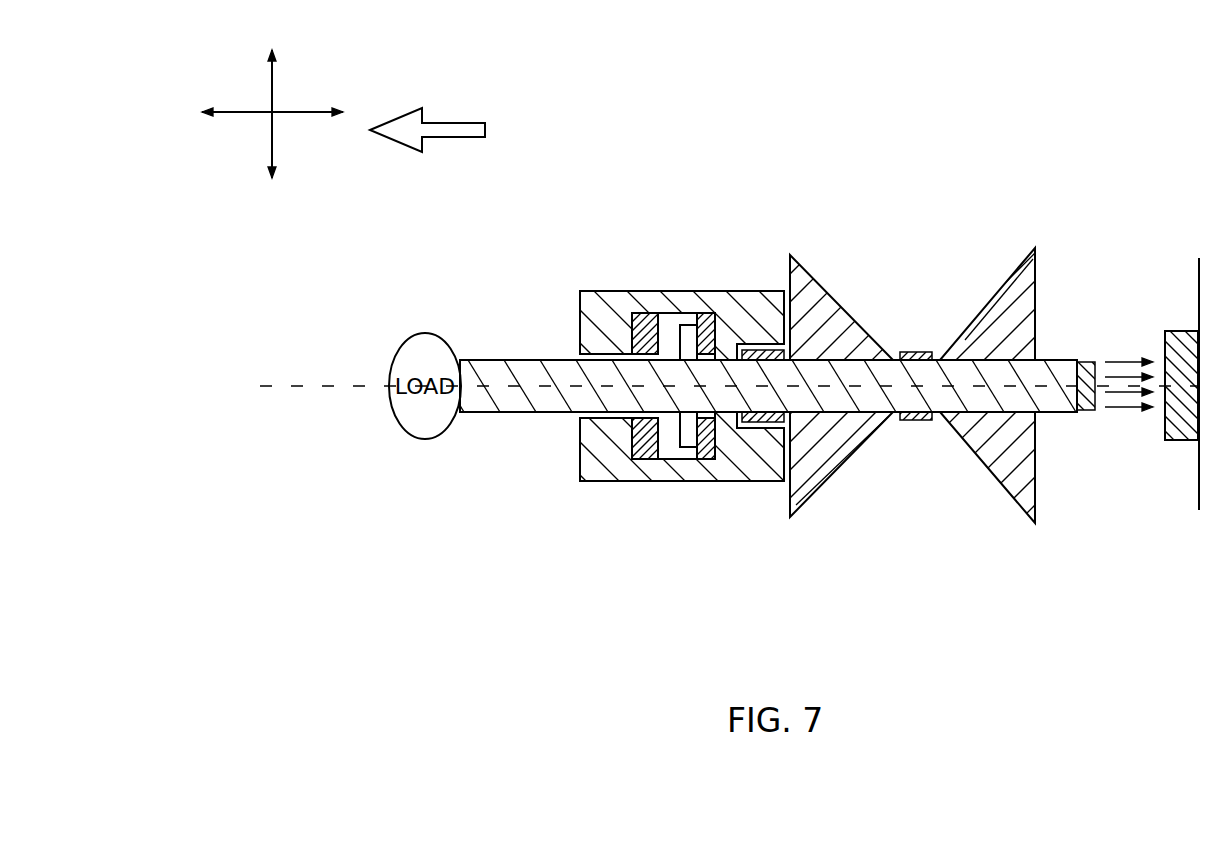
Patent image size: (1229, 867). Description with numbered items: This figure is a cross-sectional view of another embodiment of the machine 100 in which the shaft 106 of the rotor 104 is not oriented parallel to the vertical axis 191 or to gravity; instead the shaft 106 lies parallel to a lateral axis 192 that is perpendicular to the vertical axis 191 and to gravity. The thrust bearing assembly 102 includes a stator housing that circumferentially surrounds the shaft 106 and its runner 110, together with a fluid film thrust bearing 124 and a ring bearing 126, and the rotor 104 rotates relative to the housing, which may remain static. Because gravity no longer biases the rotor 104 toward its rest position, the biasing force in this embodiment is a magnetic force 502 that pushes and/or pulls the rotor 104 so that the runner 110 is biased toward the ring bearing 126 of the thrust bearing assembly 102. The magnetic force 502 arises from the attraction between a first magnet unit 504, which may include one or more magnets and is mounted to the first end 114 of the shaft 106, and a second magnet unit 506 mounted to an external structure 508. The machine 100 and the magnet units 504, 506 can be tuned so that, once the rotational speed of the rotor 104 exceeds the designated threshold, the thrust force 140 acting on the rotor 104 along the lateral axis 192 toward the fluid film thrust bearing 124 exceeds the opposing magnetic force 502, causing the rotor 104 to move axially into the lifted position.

The machine 100 is at (985, 127).
The thrust bearing assembly 102 is at (640, 490).
The rotor 104 is at (518, 418).
The shaft 106 is at (530, 358).
The runner 110 is at (690, 447).
The first end 114 is at (1077, 418).
The fluid film thrust bearing 124 is at (645, 322).
The ring bearing 126 is at (710, 322).
The thrust force 140 is at (452, 122).
The vertical axis 191 is at (272, 85).
The lateral axis 192 is at (300, 112).
The magnetic force 502 is at (1118, 360).
The first magnet unit 504 is at (1090, 362).
The second magnet unit 506 is at (1180, 332).
The external structure 508 is at (1198, 477).